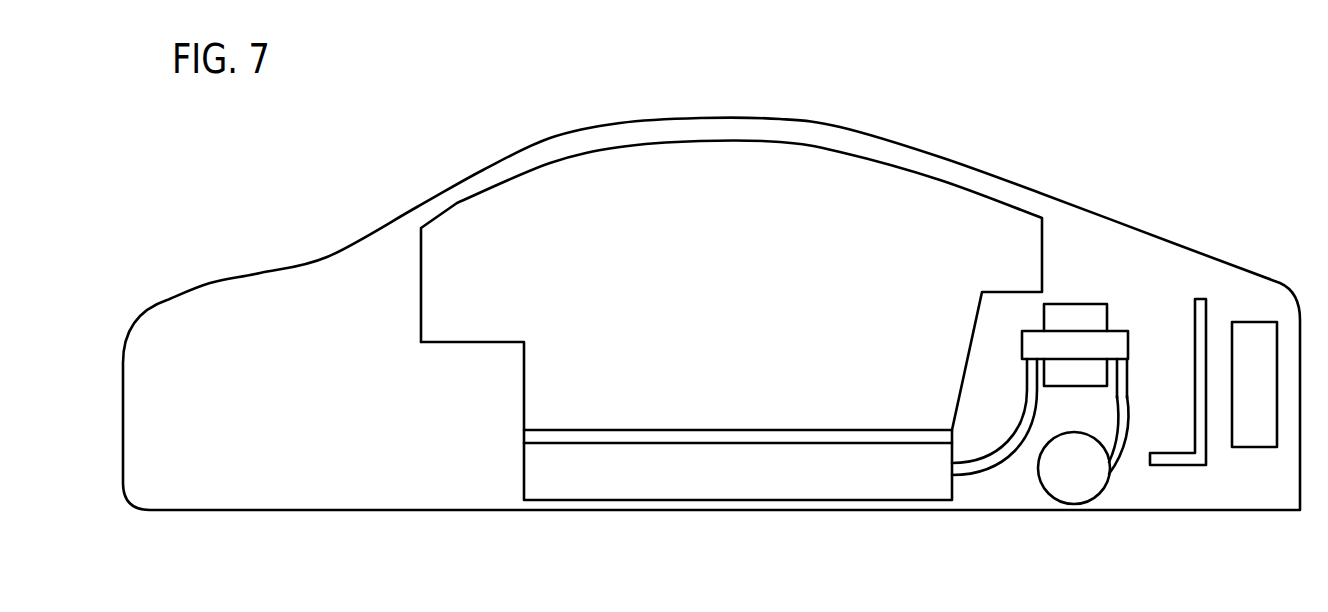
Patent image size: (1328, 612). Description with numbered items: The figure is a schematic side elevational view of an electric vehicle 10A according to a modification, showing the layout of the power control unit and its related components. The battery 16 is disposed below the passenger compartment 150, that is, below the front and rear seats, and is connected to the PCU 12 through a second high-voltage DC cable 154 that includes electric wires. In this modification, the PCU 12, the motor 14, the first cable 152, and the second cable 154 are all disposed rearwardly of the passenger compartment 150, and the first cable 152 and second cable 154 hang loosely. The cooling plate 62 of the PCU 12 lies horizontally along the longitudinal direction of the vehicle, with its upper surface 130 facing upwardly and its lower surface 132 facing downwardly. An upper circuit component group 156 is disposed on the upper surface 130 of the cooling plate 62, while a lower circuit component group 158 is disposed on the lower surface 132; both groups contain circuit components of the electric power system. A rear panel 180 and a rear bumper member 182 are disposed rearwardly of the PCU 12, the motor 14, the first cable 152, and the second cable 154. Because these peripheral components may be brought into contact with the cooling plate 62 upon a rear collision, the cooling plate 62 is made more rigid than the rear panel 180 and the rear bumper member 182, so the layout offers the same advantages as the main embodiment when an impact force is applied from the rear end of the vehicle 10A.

The electric vehicle 10A is at (238, 136).
The passenger compartment 150 is at (621, 178).
The battery 16 is at (557, 487).
The PCU 12 is at (1060, 303).
The upper circuit component group 156 is at (1075, 315).
The lower circuit component group 158 is at (1056, 375).
The cooling plate 62 is at (1037, 349).
The upper surface 130 is at (1119, 320).
The second high-voltage DC cable 154 is at (1000, 435).
The lower surface 132 is at (1125, 362).
The first cable 152 is at (1128, 460).
The motor 14 is at (1045, 492).
The rear panel 180 is at (1180, 468).
The rear bumper member 182 is at (1257, 340).